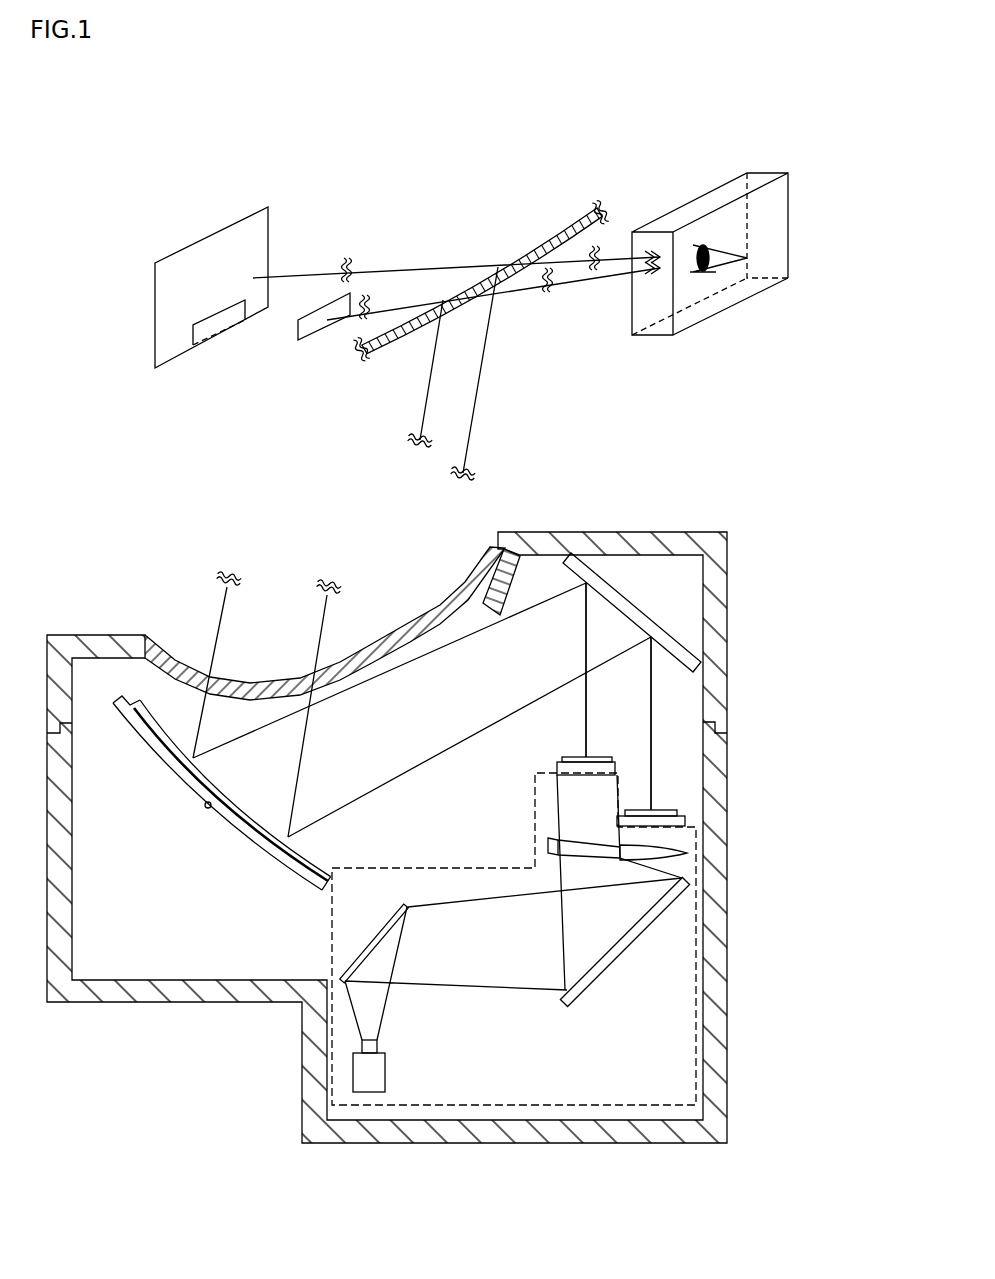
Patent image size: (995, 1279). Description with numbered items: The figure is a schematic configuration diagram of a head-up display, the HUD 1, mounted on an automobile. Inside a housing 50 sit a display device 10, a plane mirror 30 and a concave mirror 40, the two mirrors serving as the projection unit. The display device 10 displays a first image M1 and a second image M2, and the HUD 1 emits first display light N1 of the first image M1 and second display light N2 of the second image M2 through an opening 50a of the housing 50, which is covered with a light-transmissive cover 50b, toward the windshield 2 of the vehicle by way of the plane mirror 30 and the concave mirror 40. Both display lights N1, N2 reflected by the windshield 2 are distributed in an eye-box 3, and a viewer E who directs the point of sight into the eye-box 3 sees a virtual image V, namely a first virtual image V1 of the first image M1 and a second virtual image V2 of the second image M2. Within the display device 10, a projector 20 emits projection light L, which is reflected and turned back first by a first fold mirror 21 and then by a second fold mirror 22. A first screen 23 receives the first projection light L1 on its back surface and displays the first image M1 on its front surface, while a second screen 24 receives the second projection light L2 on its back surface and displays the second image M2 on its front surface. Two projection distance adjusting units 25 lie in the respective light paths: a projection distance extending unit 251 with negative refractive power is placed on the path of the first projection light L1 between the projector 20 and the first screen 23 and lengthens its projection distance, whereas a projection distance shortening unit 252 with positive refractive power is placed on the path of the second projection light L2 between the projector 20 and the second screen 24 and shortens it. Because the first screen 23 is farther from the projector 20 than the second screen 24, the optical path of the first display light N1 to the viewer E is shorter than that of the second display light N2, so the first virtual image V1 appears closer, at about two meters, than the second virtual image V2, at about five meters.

The HUD 1 is at (664, 509).
The windshield 2 is at (563, 223).
The eye-box 3 is at (696, 189).
The viewer E is at (713, 273).
The virtual image V is at (252, 285).
The first virtual image V1 is at (298, 339).
The second virtual image V2 is at (268, 226).
The first display light N1 is at (433, 364).
The second display light N2 is at (474, 409).
The display device 10 is at (404, 862).
The projector 20 is at (390, 1071).
The first fold mirror 21 is at (395, 918).
The second fold mirror 22 is at (568, 1017).
The first screen 23 is at (557, 768).
The second screen 24 is at (686, 817).
The lens unit 25 is at (629, 872).
The projection distance extending unit 251 is at (548, 848).
The projection distance shortening unit 252 is at (670, 855).
The plane mirror 30 is at (630, 608).
The concave mirror 40 is at (140, 733).
The housing 50 is at (97, 623).
The opening 50a is at (158, 647).
The light-transmissive cover 50b is at (425, 619).
The first image M1 is at (602, 754).
The second image M2 is at (672, 798).
The projection light L is at (613, 718).
The first projection light L1 is at (587, 814).
The second projection light L2 is at (668, 834).